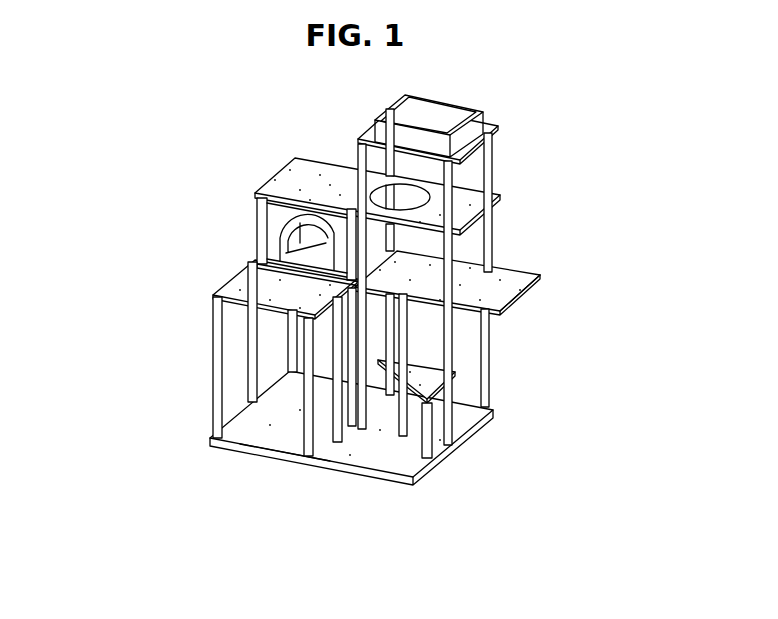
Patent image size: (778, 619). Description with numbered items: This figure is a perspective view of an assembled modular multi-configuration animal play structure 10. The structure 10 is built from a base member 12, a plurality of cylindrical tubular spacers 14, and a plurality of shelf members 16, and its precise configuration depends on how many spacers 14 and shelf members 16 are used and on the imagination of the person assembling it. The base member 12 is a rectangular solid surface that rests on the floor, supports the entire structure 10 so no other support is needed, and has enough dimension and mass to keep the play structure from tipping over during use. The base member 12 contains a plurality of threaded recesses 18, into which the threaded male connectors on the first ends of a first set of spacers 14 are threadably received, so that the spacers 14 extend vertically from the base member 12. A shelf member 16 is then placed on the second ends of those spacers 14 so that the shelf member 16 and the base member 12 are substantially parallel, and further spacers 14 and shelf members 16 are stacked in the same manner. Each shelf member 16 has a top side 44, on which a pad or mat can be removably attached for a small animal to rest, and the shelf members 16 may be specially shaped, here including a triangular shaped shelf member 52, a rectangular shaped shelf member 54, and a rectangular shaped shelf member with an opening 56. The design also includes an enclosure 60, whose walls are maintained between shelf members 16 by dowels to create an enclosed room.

The modular multi-configuration structure 10 is at (217, 237).
The base member 12 is at (427, 476).
The cylindrical tubular spacers 14 is at (217, 363).
The shelf members 16 is at (218, 290).
The threaded recesses 18 is at (268, 446).
The top side 44 is at (503, 284).
The triangular shaped shelf member 52 is at (455, 391).
The rectangular shaped shelf member 54 is at (506, 313).
The rectangular shaped shelf member with an opening 56 is at (474, 196).
The enclosure 60 is at (282, 214).